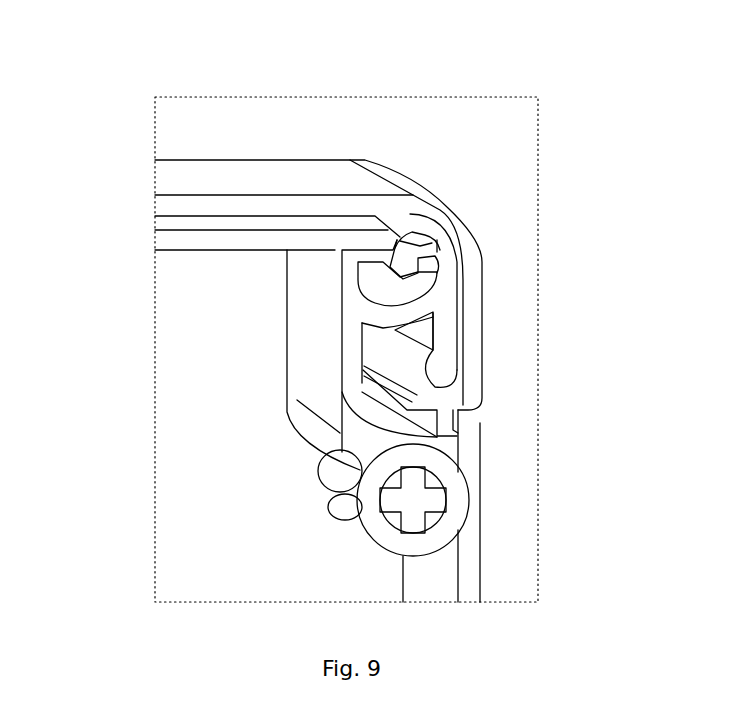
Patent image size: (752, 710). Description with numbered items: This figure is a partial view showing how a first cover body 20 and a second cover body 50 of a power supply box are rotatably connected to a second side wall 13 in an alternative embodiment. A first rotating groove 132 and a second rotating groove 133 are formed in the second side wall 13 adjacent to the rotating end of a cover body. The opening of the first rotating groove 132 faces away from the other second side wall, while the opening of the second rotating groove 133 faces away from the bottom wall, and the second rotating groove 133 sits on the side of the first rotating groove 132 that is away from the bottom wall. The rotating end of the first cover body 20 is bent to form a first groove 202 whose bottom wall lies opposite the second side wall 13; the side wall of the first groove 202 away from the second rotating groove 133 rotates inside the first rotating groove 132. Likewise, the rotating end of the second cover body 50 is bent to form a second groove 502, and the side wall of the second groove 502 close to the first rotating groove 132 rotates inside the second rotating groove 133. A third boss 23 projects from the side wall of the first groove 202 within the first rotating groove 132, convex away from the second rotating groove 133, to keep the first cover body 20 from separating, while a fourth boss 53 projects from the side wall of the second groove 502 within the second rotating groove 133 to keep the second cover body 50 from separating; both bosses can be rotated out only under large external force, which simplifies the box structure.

The first cover body 20 is at (302, 168).
The second cover body 50 is at (213, 238).
The second groove 502 is at (405, 232).
The fourth boss 53 is at (417, 273).
The first groove 202 is at (465, 302).
The second rotating groove 133 is at (357, 288).
The first rotating groove 132 is at (362, 383).
The third boss 23 is at (447, 437).
The second side wall 13 is at (469, 548).